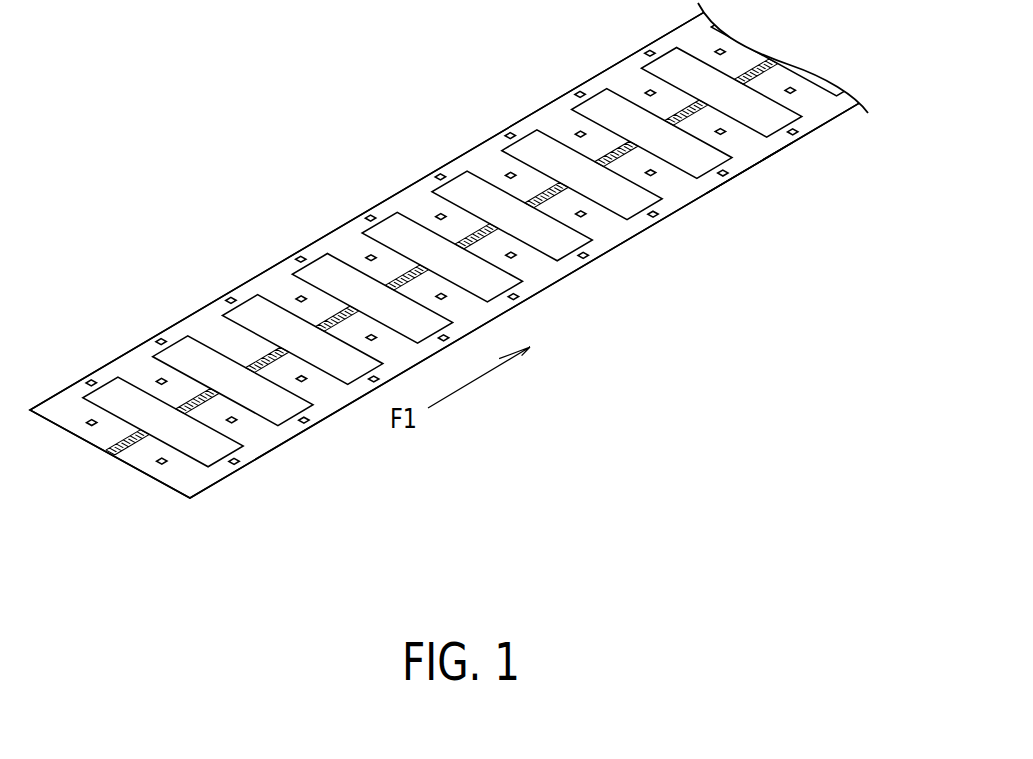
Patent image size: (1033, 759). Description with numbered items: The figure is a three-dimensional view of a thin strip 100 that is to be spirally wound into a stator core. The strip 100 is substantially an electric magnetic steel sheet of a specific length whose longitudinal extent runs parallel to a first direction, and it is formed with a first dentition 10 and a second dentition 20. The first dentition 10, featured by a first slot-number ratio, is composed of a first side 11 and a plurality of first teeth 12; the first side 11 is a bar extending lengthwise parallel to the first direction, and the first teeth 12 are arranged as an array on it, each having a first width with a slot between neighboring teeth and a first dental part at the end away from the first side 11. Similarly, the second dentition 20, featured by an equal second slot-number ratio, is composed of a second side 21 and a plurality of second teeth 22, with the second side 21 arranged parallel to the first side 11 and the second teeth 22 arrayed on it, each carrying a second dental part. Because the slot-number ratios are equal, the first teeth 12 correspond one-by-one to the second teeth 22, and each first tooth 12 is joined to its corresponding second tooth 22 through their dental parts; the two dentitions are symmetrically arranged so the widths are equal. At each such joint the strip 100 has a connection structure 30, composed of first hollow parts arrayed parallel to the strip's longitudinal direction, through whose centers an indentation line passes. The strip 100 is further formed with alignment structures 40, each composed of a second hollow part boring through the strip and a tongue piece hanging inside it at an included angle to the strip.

The strip 100 is at (237, 132).
The first dentition 10 is at (427, 100).
The first side 11 is at (475, 152).
The first tooth 12 is at (423, 215).
The second dentition 20 is at (720, 252).
The second side 21 is at (682, 193).
The second tooth 22 is at (592, 222).
The connection structure 30 is at (255, 352).
The alignment structure 40 is at (297, 295).